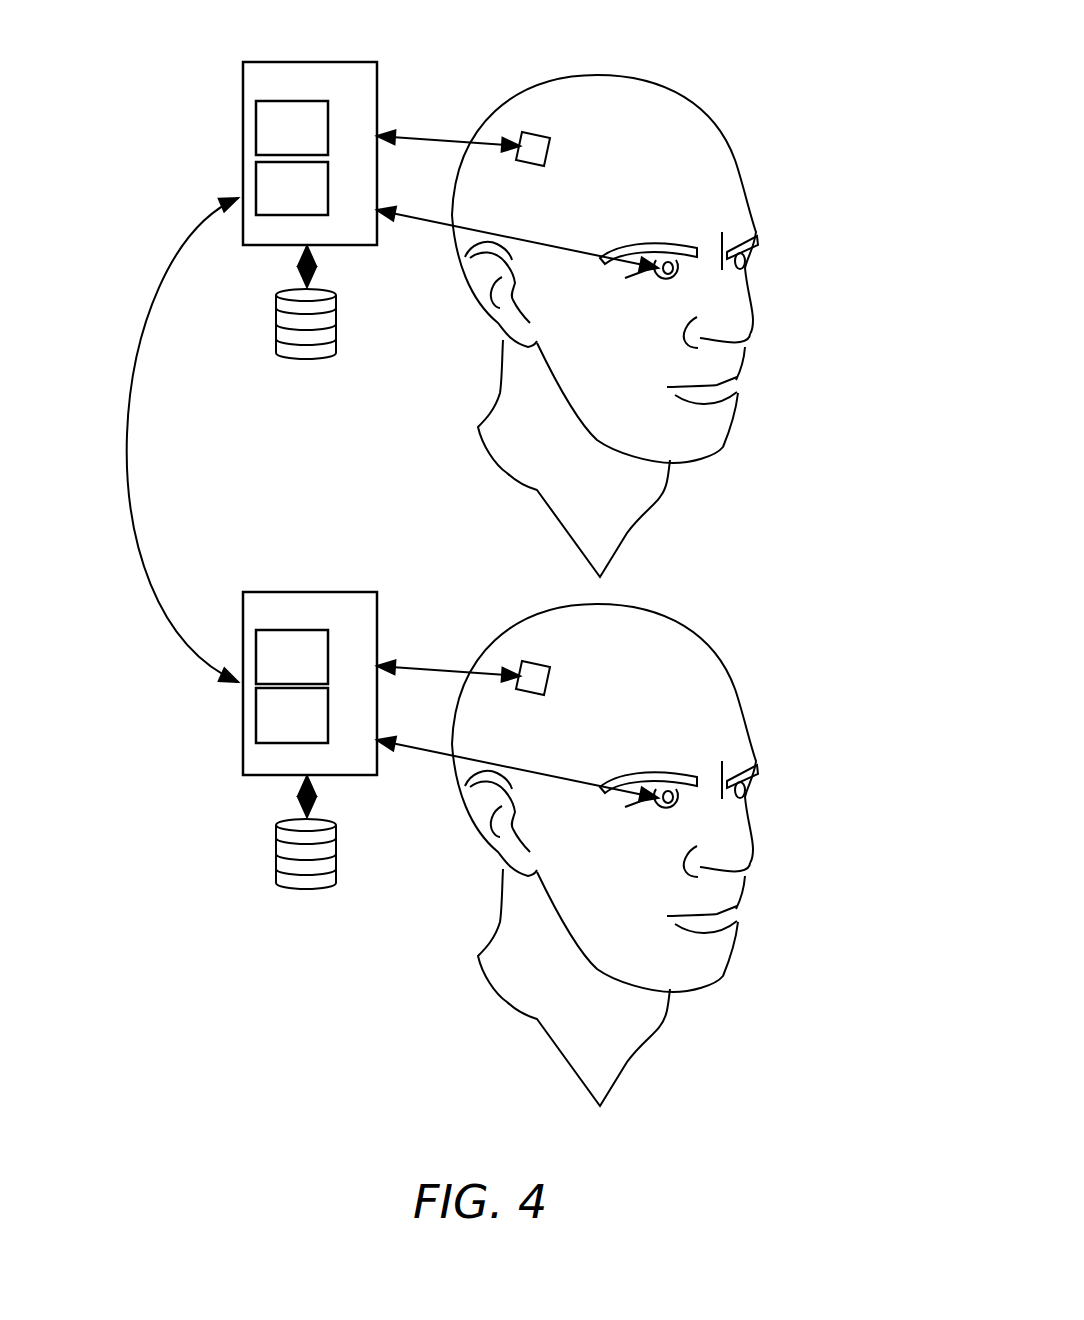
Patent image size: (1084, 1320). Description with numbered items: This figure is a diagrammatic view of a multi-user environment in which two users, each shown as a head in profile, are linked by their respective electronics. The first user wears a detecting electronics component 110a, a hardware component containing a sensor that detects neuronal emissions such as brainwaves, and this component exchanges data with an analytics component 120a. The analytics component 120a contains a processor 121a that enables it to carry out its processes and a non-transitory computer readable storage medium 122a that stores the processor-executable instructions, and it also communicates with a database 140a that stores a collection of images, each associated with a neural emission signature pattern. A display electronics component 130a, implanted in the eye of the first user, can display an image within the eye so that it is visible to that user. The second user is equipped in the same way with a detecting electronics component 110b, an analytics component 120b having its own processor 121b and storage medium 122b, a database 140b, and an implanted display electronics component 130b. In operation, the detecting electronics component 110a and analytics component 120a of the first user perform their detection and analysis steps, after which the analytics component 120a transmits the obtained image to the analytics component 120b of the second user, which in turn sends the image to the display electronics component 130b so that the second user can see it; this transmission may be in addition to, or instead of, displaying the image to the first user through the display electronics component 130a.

The detecting electronics component 110a is at (535, 132).
The detecting electronics component 110b is at (496, 620).
The analytics component 120a is at (336, 91).
The analytics component 120b is at (310, 683).
The processor 121a is at (317, 142).
The processor 121b is at (292, 657).
The non-transitory computer readable storage medium 122a is at (317, 204).
The non-transitory computer readable storage medium 122b is at (292, 715).
The display electronics component 130a is at (667, 265).
The display electronics component 130b is at (738, 742).
The database 140a is at (307, 340).
The database 140b is at (308, 869).